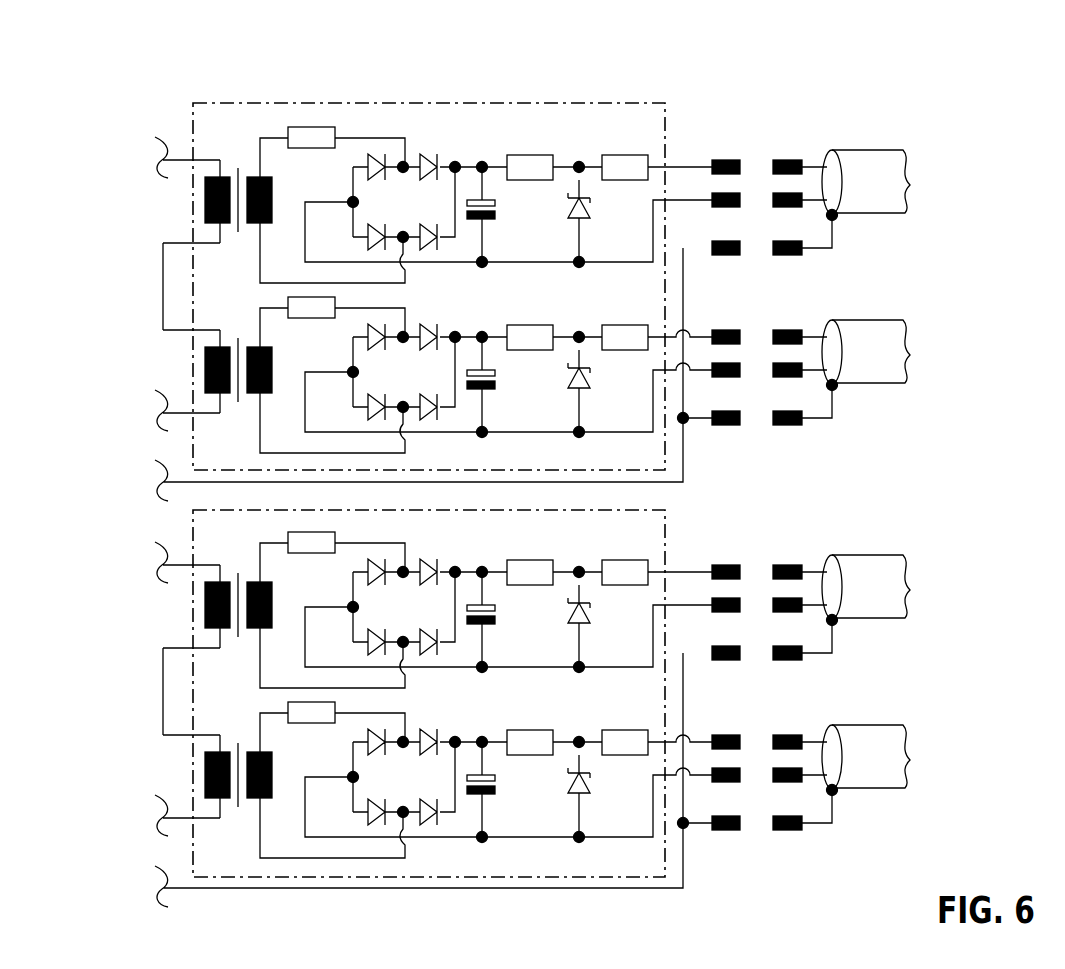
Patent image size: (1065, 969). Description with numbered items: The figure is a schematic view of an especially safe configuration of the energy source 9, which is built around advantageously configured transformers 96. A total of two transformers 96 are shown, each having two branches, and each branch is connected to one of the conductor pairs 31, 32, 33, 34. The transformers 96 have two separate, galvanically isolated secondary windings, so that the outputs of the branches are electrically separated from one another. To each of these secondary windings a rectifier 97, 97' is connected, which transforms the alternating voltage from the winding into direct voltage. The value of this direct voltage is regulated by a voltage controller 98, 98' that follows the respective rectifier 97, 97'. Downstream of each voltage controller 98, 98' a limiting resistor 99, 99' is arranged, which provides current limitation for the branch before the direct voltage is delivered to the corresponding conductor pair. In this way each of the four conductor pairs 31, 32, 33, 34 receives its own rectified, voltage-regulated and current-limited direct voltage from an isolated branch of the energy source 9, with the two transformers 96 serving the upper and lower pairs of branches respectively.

The energy source 9 is at (347, 86).
The transformers 96 is at (140, 284).
The rectifier 97 is at (415, 143).
The voltage controller 98 is at (577, 149).
The limiting resistor 99 is at (629, 108).
The rectifier 97' is at (293, 393).
The voltage controller 98' is at (658, 416).
The limiting resistor 99' is at (677, 310).
The conductor pair 31 is at (863, 203).
The conductor pair 32 is at (811, 386).
The conductor pair 33 is at (811, 621).
The conductor pair 34 is at (811, 791).